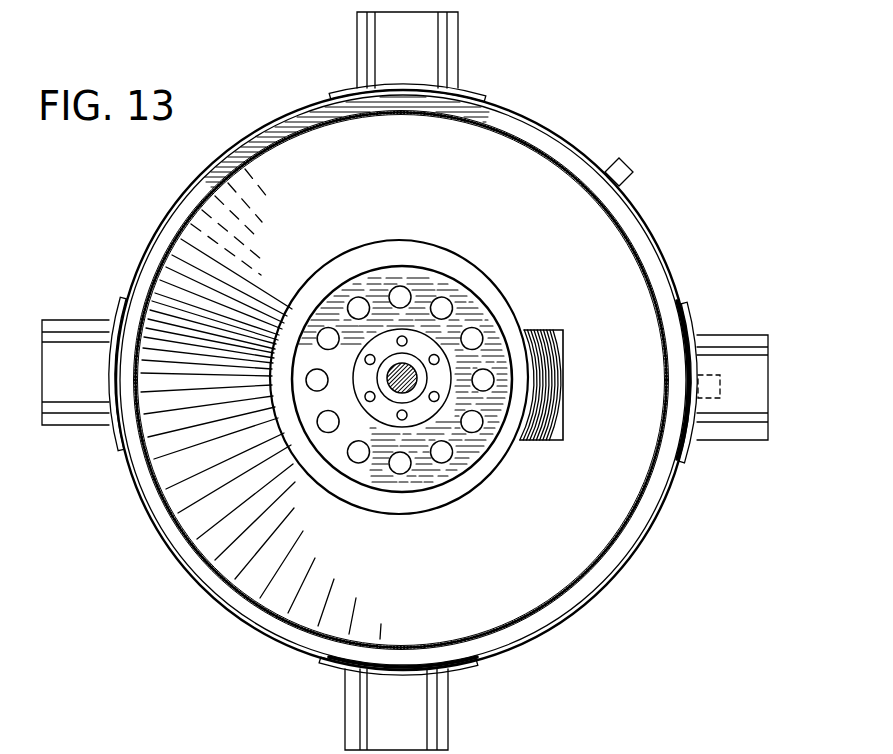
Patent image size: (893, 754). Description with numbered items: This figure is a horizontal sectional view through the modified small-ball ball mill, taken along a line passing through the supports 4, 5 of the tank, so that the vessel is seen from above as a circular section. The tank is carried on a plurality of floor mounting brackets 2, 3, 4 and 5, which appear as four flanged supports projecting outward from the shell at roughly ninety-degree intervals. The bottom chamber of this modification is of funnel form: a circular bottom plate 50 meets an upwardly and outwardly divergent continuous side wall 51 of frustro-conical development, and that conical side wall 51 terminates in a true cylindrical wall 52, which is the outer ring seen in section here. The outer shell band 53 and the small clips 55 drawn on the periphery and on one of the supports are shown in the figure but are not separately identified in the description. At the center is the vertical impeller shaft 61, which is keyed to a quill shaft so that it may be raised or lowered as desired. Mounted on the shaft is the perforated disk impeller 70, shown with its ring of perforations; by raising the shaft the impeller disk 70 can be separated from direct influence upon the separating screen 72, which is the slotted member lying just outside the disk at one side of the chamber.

The floor mounting bracket 2 is at (459, 48).
The floor mounting bracket 3 is at (450, 721).
The floor mounting bracket 4 is at (723, 336).
The floor mounting bracket 5 is at (71, 320).
The circular bottom plate 50 is at (332, 278).
The conical side wall 51 is at (540, 197).
The cylindrical wall 52 is at (645, 284).
The outer shell 53 is at (648, 223).
The fastening clip 55 is at (614, 158).
The impeller shaft 61 is at (410, 391).
The perforated disk impeller 70 is at (383, 288).
The separating screen 72 is at (550, 372).